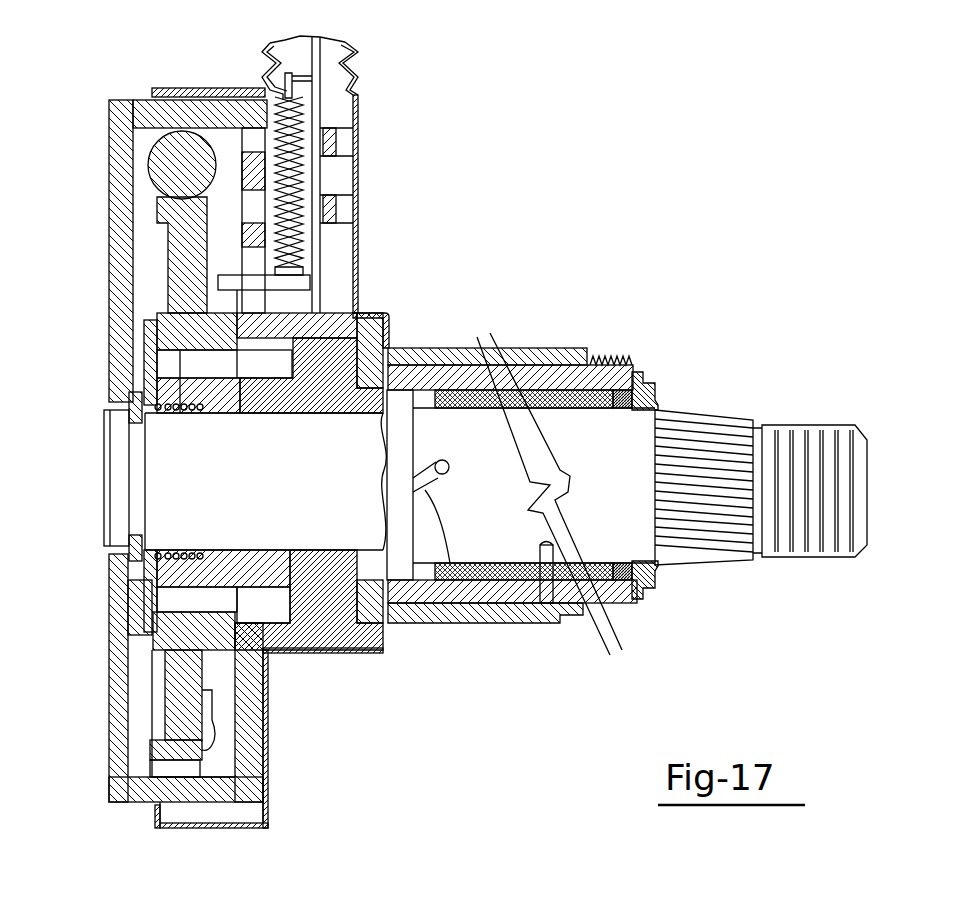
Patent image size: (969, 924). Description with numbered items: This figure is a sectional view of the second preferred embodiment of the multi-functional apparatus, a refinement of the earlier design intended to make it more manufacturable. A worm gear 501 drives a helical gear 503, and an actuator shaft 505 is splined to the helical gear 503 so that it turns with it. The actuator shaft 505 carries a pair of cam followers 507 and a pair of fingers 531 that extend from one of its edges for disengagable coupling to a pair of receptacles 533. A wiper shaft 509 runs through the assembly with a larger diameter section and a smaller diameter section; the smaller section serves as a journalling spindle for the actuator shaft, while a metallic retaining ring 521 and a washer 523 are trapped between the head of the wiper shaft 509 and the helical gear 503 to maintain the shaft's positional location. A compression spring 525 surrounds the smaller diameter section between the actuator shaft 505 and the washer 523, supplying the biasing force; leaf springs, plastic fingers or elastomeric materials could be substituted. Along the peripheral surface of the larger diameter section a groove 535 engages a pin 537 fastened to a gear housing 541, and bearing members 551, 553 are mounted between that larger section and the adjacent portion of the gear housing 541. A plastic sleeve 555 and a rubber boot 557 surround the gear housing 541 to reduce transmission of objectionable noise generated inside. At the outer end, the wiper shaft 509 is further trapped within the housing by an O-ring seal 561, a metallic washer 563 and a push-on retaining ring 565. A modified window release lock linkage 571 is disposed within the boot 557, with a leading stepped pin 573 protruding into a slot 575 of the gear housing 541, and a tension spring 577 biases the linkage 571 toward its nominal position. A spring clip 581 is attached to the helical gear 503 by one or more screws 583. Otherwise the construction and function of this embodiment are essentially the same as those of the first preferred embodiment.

The worm gear 501 is at (167, 173).
The helical gear 503 is at (173, 258).
The actuator shaft 505 is at (275, 397).
The cam followers 507 is at (327, 358).
The wiper shaft 509 is at (625, 368).
The metallic retaining ring 521 is at (133, 538).
The washer 523 is at (142, 596).
The compression spring 525 is at (186, 550).
The fingers 531 is at (450, 582).
The receptacles 533 is at (442, 460).
The groove 535 is at (515, 582).
The pin 537 is at (573, 617).
The gear housing 541 is at (322, 635).
The bearing member 551 is at (583, 447).
The bearing member 553 is at (467, 390).
The plastic sleeve 555 is at (423, 603).
The rubber boot 557 is at (225, 828).
The O-ring seal 561 is at (620, 412).
The metallic washer 563 is at (633, 370).
The push-on retaining ring 565 is at (650, 397).
The window release lock linkage 571 is at (323, 185).
The leading stepped pin 573 is at (233, 282).
The slot 575 is at (257, 256).
The tension spring 577 is at (303, 110).
The spring clip 581 is at (213, 690).
The screws 583 is at (213, 730).